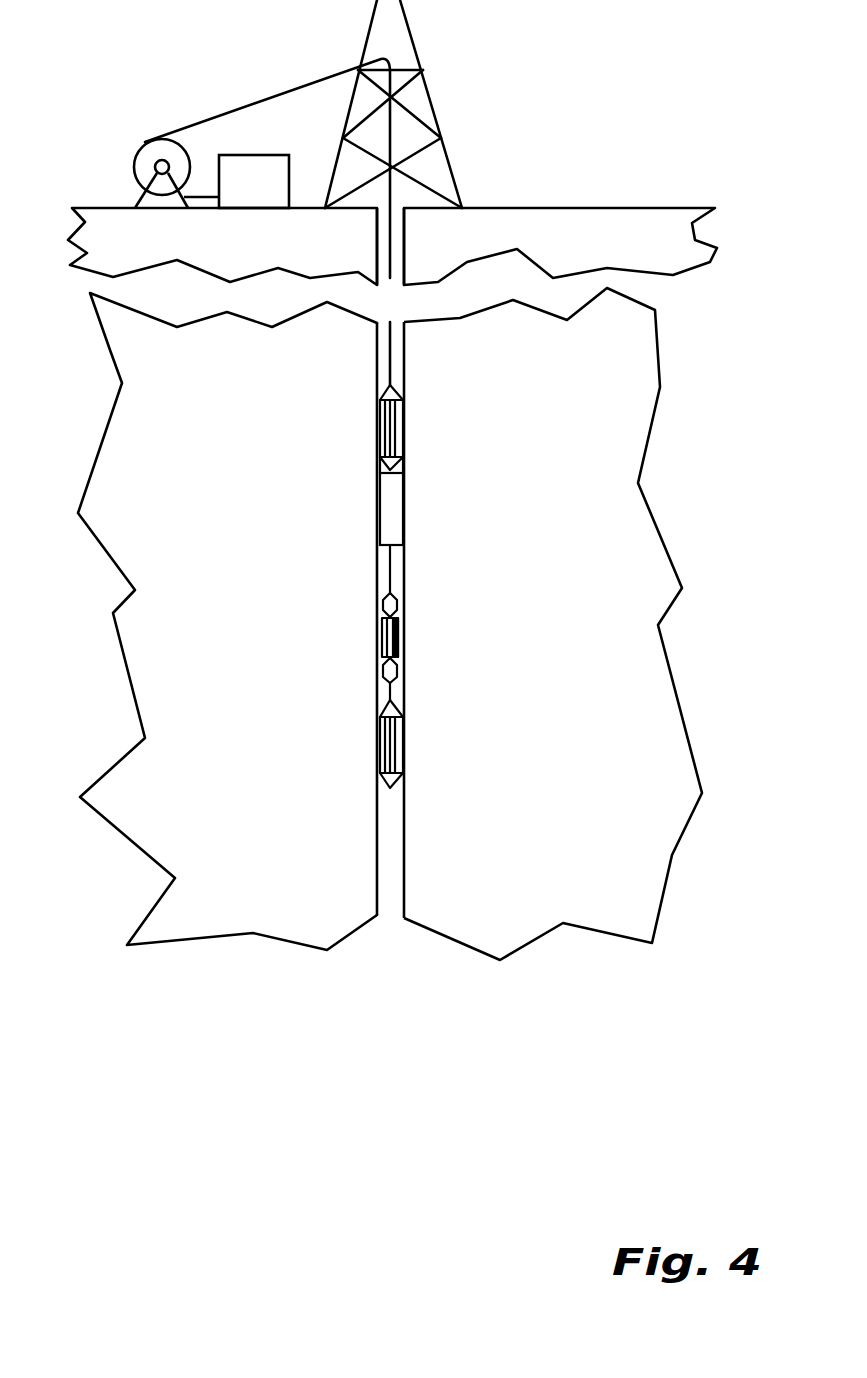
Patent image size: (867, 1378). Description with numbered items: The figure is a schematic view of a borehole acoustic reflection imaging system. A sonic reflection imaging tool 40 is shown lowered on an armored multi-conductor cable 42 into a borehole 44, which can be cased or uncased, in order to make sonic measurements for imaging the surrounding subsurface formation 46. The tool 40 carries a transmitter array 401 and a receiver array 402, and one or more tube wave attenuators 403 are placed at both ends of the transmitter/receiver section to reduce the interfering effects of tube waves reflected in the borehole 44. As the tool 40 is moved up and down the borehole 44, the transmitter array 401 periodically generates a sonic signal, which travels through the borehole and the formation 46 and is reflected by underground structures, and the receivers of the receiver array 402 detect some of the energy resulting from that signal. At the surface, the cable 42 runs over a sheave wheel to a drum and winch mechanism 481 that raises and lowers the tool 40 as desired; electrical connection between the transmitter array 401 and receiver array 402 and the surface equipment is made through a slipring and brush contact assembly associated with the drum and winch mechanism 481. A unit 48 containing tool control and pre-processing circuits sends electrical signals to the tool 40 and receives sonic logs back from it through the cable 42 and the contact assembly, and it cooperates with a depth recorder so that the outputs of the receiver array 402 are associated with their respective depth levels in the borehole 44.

The sonic reflection imaging tool 40 is at (317, 465).
The armored multi-conductor cable 42 is at (303, 83).
The borehole 44 is at (377, 913).
The subsurface formation 46 is at (538, 587).
The unit 48 is at (265, 196).
The drum and winch mechanism 481 is at (135, 166).
The transmitter array 401 is at (377, 533).
The receiver array 402 is at (383, 668).
The tube wave attenuators 403 is at (398, 420).